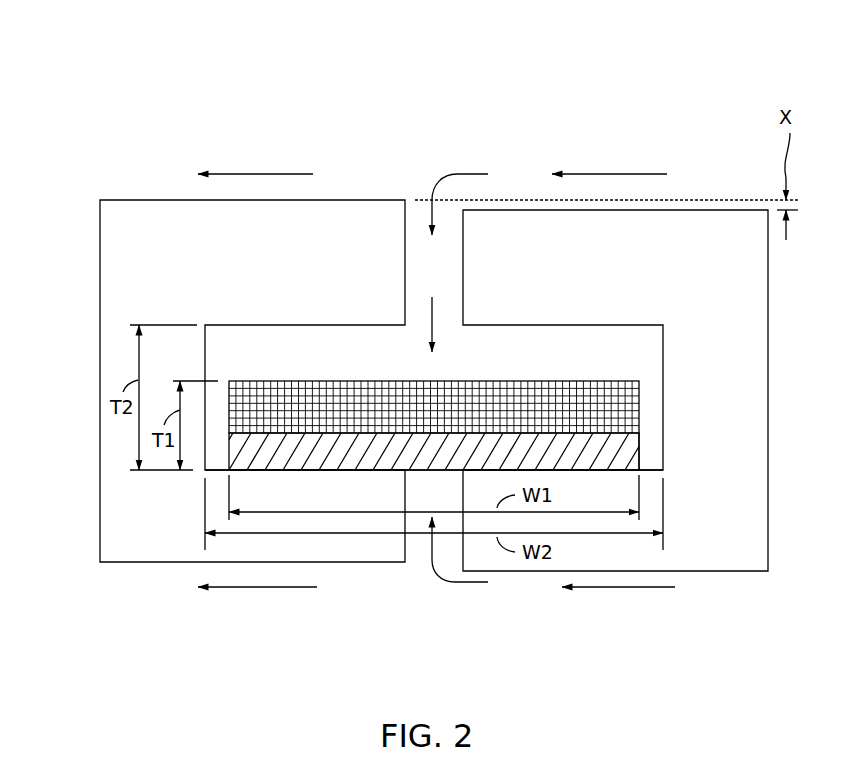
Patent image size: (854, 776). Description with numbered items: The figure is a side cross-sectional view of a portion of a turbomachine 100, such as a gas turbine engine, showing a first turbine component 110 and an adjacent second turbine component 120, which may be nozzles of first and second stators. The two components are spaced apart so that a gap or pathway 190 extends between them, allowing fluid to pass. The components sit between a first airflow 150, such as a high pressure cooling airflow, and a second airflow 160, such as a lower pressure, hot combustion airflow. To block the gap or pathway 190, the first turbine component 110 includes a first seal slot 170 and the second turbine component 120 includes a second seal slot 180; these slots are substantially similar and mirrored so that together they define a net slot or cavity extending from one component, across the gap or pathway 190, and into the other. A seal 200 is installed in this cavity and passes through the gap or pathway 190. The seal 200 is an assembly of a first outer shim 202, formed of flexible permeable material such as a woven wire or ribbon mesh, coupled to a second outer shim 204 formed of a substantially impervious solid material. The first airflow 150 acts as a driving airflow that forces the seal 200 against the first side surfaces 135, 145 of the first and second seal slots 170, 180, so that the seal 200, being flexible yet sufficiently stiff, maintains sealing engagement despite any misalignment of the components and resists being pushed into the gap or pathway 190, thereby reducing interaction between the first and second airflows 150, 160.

The turbomachine 100 is at (126, 55).
The first turbine component 110 is at (137, 213).
The second turbine component 120 is at (728, 213).
The first side surface 135 is at (243, 472).
The first side surface 145 is at (642, 456).
The first airflow 150 is at (600, 173).
The second airflow 160 is at (612, 587).
The first seal slot 170 is at (268, 345).
The second seal slot 180 is at (515, 352).
The gap or pathway 190 is at (452, 280).
The seal 200 is at (622, 377).
The first outer shim 202 is at (533, 383).
The second outer shim 204 is at (285, 470).